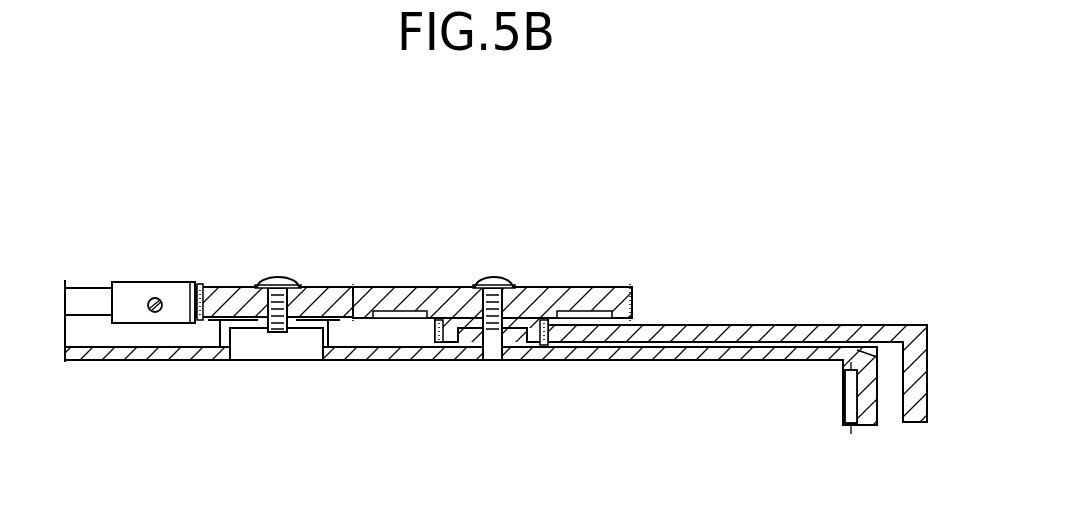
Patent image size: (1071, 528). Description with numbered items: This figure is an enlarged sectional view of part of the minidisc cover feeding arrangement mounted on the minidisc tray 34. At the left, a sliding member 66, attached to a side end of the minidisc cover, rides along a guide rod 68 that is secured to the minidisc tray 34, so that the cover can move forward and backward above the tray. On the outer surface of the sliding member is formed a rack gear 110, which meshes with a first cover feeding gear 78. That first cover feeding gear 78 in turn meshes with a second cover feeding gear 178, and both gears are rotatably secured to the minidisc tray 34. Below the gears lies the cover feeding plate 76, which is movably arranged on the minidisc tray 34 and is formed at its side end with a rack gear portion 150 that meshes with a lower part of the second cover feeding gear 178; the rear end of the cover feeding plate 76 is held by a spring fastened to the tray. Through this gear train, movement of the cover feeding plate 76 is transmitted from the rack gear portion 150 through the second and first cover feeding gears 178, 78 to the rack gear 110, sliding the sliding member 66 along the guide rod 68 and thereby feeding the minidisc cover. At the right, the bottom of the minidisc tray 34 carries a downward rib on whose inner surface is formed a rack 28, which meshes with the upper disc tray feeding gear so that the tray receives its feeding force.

The sliding member 66 is at (142, 286).
The guide rod 68 is at (159, 309).
The rack gear 110 is at (187, 283).
The first cover feeding gear 78 is at (245, 287).
The second cover feeding gear 178 is at (420, 288).
The rack gear portion 150 is at (533, 346).
The minidisc tray 34 is at (212, 358).
The cover feeding plate 76 is at (717, 333).
The rack 28 is at (843, 400).